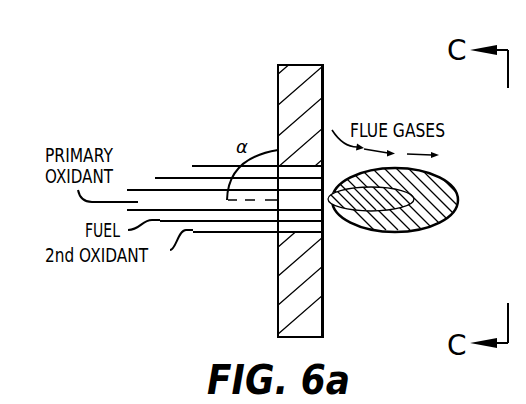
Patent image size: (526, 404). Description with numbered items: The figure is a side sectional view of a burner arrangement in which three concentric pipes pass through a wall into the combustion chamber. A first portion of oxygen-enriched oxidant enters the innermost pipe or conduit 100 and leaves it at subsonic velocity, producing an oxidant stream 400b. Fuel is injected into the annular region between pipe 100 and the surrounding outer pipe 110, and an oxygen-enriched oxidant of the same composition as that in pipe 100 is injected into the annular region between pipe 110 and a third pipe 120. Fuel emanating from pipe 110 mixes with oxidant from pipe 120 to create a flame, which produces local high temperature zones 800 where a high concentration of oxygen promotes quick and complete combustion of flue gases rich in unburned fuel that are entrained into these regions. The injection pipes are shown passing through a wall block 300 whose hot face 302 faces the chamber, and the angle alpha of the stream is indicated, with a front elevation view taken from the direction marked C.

The pipe 100 is at (142, 188).
The outer pipe 110 is at (168, 177).
The third pipe 120 is at (213, 165).
The burner block 300 is at (293, 88).
The hot face of burner block 302 is at (325, 78).
The oxidant stream 400b is at (402, 209).
The local high temperature zones 800 is at (392, 233).